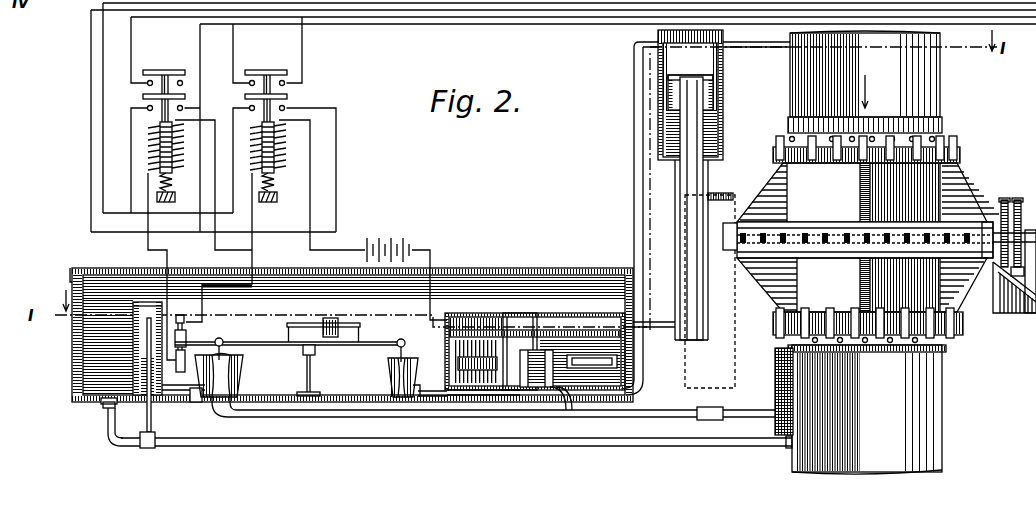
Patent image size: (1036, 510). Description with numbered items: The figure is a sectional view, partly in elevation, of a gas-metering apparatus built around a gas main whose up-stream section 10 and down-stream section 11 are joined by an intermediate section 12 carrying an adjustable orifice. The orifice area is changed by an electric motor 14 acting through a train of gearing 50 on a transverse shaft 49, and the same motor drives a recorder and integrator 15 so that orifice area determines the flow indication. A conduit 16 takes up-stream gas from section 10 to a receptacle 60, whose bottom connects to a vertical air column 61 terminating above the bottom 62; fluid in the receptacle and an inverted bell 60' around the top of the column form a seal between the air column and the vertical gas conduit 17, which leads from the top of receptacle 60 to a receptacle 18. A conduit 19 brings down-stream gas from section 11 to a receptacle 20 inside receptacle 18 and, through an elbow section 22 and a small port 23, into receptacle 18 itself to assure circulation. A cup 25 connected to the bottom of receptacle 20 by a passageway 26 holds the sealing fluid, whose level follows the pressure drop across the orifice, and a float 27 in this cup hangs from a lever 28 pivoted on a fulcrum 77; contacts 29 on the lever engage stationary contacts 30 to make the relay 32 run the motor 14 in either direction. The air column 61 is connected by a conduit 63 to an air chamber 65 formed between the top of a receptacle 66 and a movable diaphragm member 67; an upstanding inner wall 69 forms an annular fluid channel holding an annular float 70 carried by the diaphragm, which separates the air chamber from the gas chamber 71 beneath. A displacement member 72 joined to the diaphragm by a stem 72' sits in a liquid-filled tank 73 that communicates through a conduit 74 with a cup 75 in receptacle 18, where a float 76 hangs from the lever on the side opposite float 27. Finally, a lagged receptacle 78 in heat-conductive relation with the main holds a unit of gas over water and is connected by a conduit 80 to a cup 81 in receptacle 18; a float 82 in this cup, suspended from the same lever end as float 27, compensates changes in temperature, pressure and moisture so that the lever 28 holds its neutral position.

The gas main section 10 is at (940, 72).
The gas main section 11 is at (935, 436).
The intermediate section 12 is at (957, 198).
The electric motor 14 is at (1028, 292).
The recorder and integrator 15 is at (733, 195).
The conduit 16 is at (770, 49).
The conduit 17 is at (634, 170).
The receptacle 18 is at (543, 252).
The conduit 19 is at (476, 448).
The receptacle 20 is at (133, 322).
The elbow section 22 is at (107, 425).
The small port 23 is at (110, 400).
The cup 25 is at (243, 387).
The passageway 26 is at (170, 387).
The float 27 is at (211, 402).
The lever 28 is at (273, 340).
The contacts 29 is at (187, 342).
The stationary contacts 30 is at (182, 315).
The relay 32 is at (338, 128).
The shaft 49 is at (842, 245).
The train of gearing 50 is at (997, 205).
The receptacle 60 is at (712, 95).
The inverted bell 60' is at (719, 92).
The vertical column 61 is at (678, 198).
The bottom of receptacle 62 is at (720, 150).
The conduit 63 is at (640, 328).
The air chamber 65 is at (493, 323).
The receptacle 66 is at (513, 323).
The movable diaphragm member 67 is at (577, 330).
The upstanding inner wall 69 is at (475, 404).
The annular float 70 is at (617, 362).
The gas chamber 71 is at (458, 313).
The displacement member 72 is at (536, 412).
The stem 72' is at (535, 319).
The tank 73 is at (562, 393).
The conduit 74 is at (433, 398).
The cup 75 is at (388, 378).
The float 76 is at (419, 385).
The fulcrum 77 is at (309, 347).
The receptacle 78 is at (776, 405).
The conduit 80 is at (673, 416).
The cup 81 is at (232, 367).
The float 82 is at (200, 398).